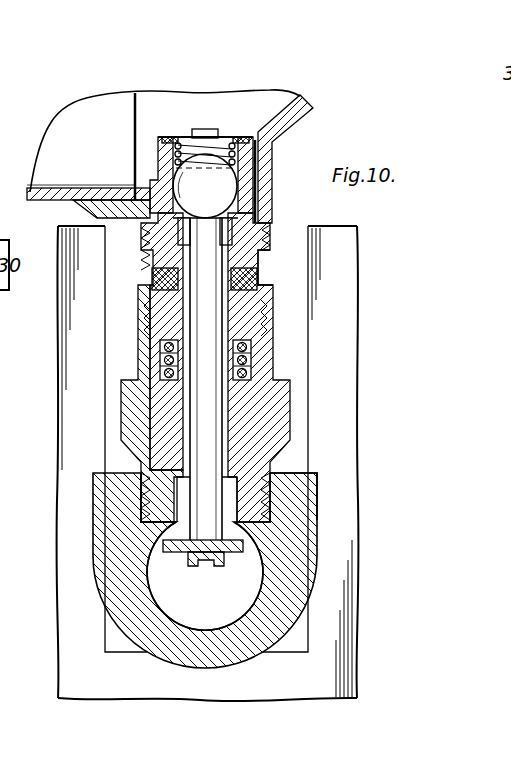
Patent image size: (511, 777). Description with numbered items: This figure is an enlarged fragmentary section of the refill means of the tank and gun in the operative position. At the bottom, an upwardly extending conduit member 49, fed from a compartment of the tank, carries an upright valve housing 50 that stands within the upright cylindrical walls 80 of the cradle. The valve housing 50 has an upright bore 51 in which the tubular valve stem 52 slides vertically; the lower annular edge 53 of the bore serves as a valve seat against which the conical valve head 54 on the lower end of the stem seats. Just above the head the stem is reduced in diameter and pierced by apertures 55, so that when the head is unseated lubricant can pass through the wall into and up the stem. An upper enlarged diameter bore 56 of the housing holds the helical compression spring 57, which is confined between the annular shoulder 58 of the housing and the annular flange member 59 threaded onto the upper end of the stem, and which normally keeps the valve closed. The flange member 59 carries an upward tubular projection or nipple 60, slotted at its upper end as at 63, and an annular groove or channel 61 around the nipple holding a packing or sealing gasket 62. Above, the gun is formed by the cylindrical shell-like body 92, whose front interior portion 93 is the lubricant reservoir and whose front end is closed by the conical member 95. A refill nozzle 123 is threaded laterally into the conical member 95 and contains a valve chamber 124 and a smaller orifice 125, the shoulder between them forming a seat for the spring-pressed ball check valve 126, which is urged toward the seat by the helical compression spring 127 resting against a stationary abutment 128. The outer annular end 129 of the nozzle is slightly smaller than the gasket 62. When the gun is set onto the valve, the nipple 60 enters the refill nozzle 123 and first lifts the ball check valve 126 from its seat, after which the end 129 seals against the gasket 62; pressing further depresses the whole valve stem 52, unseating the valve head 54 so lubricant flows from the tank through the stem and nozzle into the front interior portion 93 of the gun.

The upwardly extending conduit member 49 is at (296, 585).
The valve housing 50 is at (140, 426).
The upright bore 51 is at (242, 423).
The tubular valve stem 52 is at (226, 404).
The lower annular edge 53 is at (174, 528).
The valve head 54 is at (187, 556).
The apertures 55 is at (225, 510).
The upper enlarged diameter bore 56 is at (252, 352).
The helical compression spring 57 is at (158, 350).
The annular shoulder 58 is at (140, 397).
The annular flange member 59 is at (155, 297).
The tubular projection or nipple 60 is at (259, 258).
The annular groove or channel 61 is at (153, 279).
The packing or sealing gasket 62 is at (256, 282).
The slot 63 is at (264, 242).
The upright cylindrical walls 80 is at (60, 378).
The cylindrical shell-like body 92 is at (50, 190).
The front interior portion 93 is at (93, 112).
The conical member 95 is at (292, 100).
The refill nozzle 123 is at (262, 226).
The valve chamber 124 is at (200, 160).
The orifice 125 is at (143, 240).
The ball check valve 126 is at (216, 186).
The helical compression spring 127 is at (257, 147).
The stationary abutment 128 is at (201, 129).
The outer annular end 129 is at (145, 260).